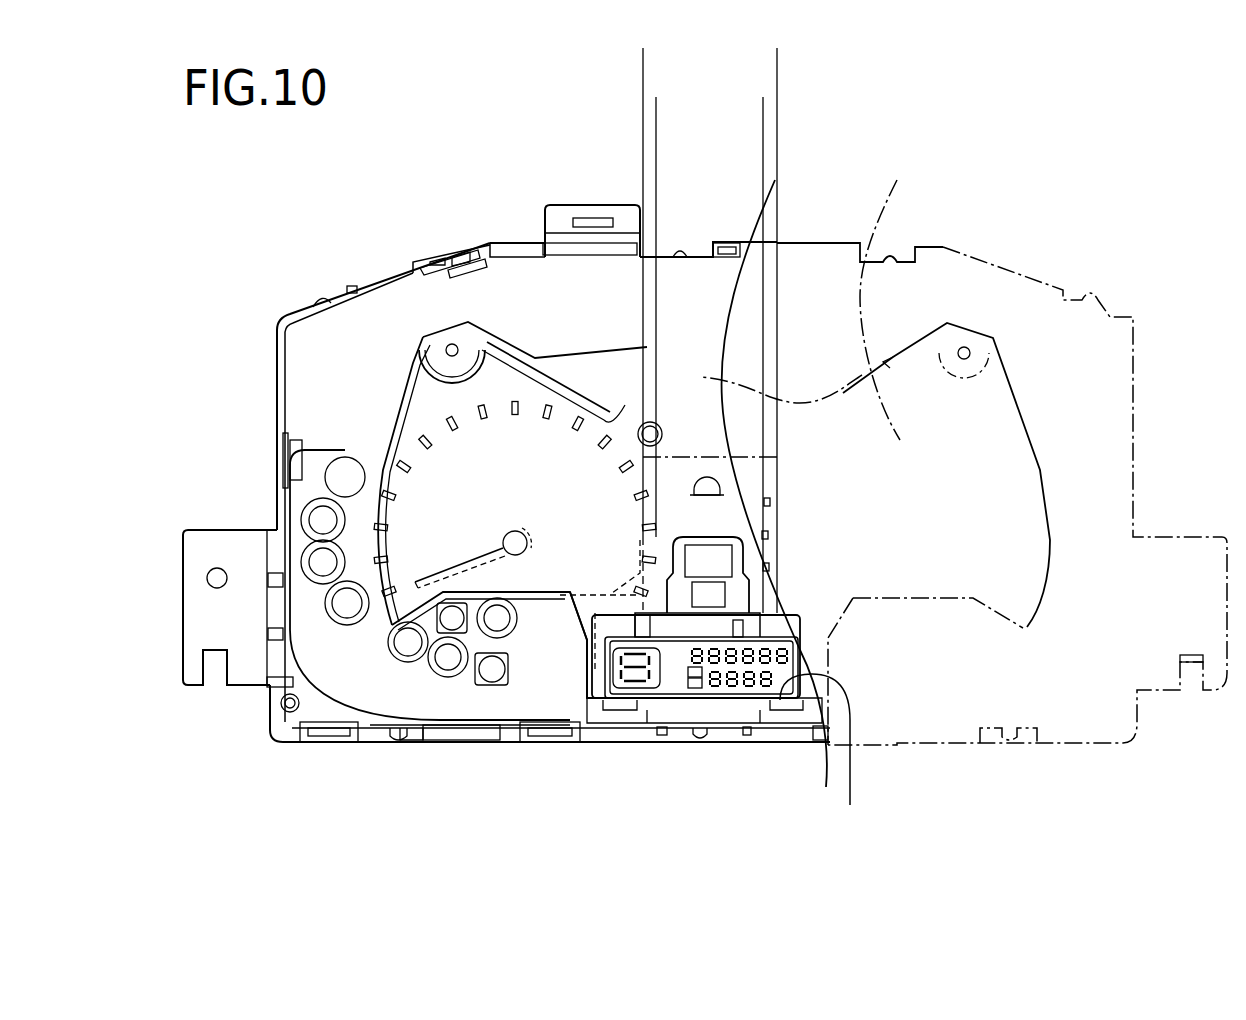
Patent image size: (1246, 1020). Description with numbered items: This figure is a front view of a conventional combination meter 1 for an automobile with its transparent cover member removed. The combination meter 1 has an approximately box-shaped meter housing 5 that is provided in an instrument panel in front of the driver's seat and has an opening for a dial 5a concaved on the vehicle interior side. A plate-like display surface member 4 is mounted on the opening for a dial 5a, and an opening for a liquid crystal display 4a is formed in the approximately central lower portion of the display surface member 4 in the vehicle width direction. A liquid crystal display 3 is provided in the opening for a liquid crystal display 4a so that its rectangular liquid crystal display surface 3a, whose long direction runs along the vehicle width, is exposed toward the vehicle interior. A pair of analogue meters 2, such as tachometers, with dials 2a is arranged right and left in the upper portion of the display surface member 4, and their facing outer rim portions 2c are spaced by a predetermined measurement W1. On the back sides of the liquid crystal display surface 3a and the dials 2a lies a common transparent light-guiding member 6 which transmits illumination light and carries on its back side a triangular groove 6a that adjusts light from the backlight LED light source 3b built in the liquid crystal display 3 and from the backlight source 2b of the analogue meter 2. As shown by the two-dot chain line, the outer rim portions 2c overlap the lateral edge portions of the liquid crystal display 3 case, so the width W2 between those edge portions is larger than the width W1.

The combination meter 1 is at (335, 268).
The analogue meter 2 is at (390, 474).
The dial 2a is at (440, 457).
The backlight source 2b is at (452, 344).
The outer rim portion 2c is at (627, 528).
The liquid crystal display 3 is at (717, 698).
The liquid crystal display surface 3a is at (675, 678).
The backlight LED light source 3b is at (624, 706).
The display surface member 4 is at (528, 284).
The opening for a liquid crystal display 4a is at (833, 680).
The meter housing 5 is at (663, 254).
The opening for a dial 5a is at (422, 717).
The light-guiding member 6 is at (595, 597).
The triangular groove 6a is at (617, 611).
The measurement between outer rim portions W1 is at (657, 117).
The width between lateral edge portions of the liquid crystal display case W2 is at (644, 65).